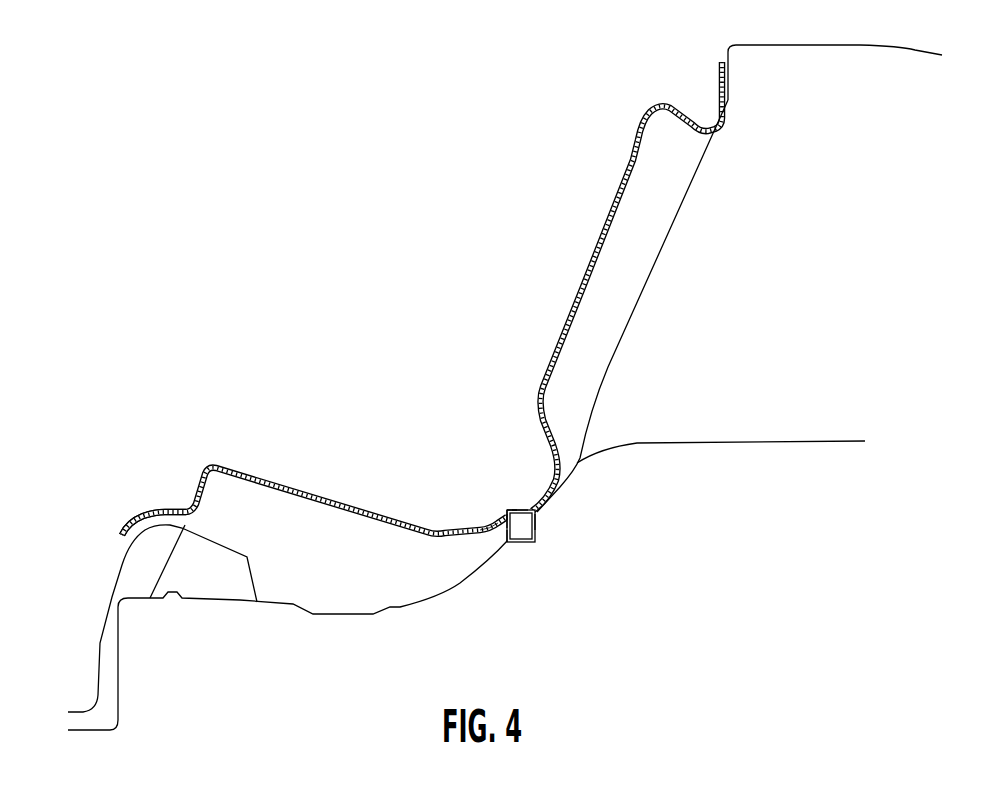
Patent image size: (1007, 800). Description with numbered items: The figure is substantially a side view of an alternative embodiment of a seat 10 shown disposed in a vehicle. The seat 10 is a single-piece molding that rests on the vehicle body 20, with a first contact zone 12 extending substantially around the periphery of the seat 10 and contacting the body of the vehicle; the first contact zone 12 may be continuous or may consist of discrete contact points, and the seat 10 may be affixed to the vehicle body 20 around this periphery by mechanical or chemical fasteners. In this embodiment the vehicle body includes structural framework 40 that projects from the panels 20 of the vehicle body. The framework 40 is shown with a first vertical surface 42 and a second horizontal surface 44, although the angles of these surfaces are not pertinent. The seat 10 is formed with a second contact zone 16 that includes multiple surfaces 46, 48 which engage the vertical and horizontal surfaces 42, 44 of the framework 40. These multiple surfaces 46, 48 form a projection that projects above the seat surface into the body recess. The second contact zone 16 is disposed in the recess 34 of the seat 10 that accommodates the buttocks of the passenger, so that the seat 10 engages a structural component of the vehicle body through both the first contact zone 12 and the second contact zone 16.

The seat 10 is at (331, 498).
The first contact zone 12 is at (714, 93).
The second contact zone 16 is at (496, 500).
The vehicle body 20 is at (663, 259).
The recess 34 is at (449, 462).
The structural framework 40 is at (541, 547).
The first vertical surface 42 is at (507, 536).
The second horizontal surface 44 is at (518, 522).
The surface 46 is at (506, 518).
The surface 48 is at (512, 510).